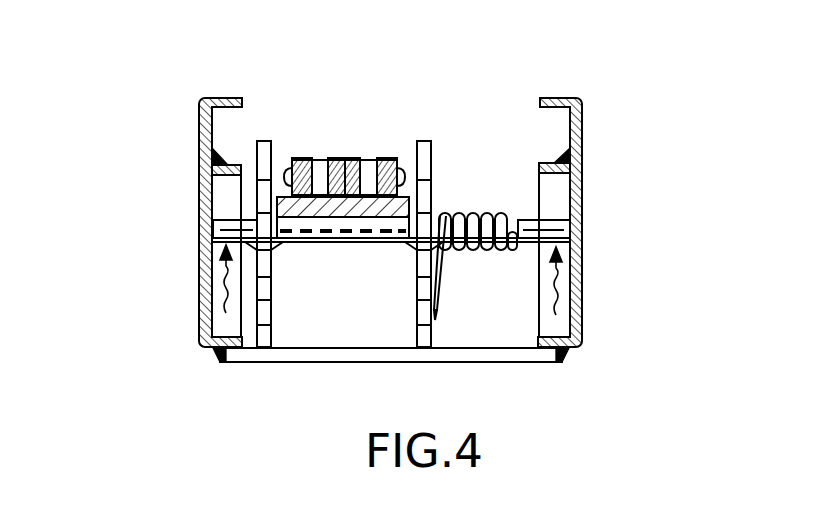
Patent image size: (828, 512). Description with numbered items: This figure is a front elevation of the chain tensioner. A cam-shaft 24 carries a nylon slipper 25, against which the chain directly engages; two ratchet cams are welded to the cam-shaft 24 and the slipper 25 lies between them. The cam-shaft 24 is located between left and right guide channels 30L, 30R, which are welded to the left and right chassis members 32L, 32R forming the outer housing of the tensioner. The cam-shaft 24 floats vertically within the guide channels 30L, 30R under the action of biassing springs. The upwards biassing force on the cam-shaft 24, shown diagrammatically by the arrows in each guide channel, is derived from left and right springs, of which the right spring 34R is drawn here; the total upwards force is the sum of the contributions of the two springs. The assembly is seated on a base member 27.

The left chassis member 32L is at (205, 101).
The right chassis member 32R is at (579, 99).
The left guide channel 30L is at (224, 165).
The right guide channel 30R is at (558, 163).
The slipper 25 is at (366, 207).
The cam-shaft 24 is at (378, 247).
The right spring 34R is at (483, 251).
The base plate 27 is at (425, 363).